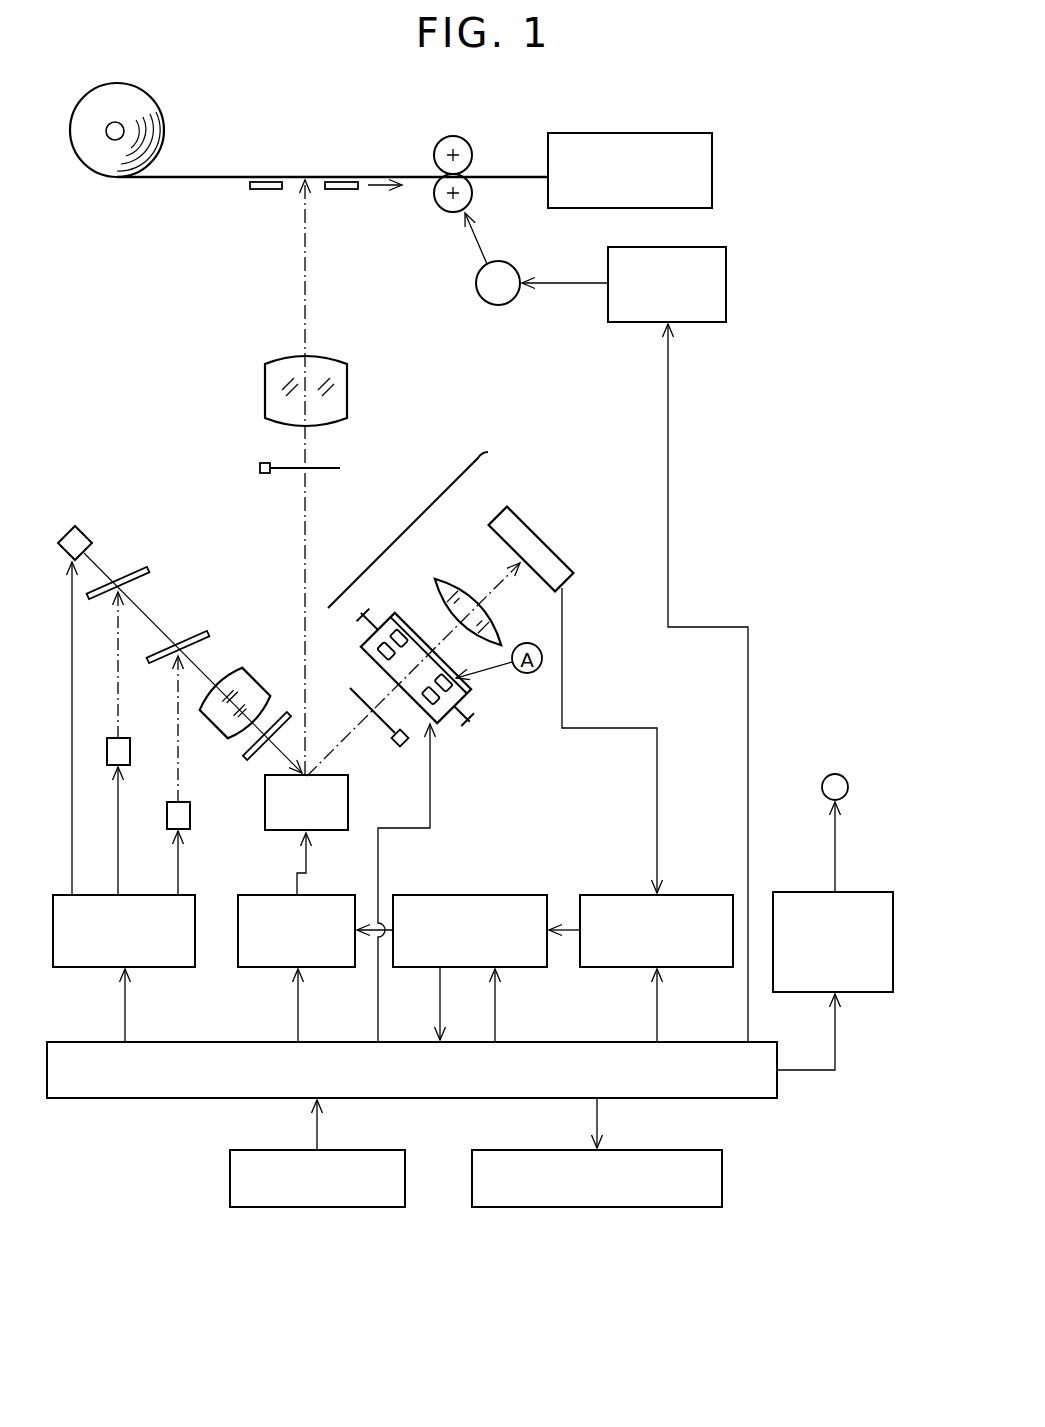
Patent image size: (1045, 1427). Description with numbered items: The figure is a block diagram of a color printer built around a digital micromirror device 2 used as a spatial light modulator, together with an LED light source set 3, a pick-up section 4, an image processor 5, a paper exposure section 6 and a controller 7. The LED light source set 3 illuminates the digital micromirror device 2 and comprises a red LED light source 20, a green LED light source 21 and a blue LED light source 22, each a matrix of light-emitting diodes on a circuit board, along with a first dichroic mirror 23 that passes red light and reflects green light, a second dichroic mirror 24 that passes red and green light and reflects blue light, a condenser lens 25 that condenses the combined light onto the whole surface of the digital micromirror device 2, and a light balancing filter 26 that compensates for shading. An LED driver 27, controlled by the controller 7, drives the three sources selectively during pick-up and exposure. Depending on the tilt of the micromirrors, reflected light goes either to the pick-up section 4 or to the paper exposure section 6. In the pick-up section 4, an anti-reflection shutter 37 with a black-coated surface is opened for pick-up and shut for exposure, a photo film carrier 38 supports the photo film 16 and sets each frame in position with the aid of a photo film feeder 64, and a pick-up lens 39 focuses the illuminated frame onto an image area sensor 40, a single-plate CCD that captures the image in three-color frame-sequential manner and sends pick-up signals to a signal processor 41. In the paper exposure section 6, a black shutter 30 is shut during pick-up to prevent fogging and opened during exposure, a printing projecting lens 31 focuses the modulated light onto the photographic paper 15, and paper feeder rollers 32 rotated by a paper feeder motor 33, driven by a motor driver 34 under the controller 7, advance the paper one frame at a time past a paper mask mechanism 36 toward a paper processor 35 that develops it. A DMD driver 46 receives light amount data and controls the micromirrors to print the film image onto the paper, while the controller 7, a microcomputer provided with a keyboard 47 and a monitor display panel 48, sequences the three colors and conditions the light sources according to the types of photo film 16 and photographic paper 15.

The digital micromirror device 2 is at (348, 790).
The LED light source set 3 is at (138, 512).
The pick-up section 4 is at (403, 531).
The image processor 5 is at (472, 895).
The paper exposure section 6 is at (400, 287).
The controller 7 is at (566, 1042).
The photographic paper 15 is at (215, 177).
The photo film 16 is at (468, 722).
The red LED light source 20 is at (73, 527).
The green LED light source 21 is at (112, 738).
The blue LED light source 22 is at (176, 802).
The first dichroic mirror 23 is at (150, 575).
The second dichroic mirror 24 is at (208, 633).
The condenser lens 25 is at (255, 688).
The light balancing filter 26 is at (255, 757).
The LED driver 27 is at (175, 967).
The black shutter 30 is at (260, 468).
The printing projecting lens 31 is at (265, 386).
The paper feeder rollers 32 is at (474, 153).
The paper feeder motor 33 is at (518, 268).
The motor driver 34 is at (726, 283).
The paper processor 35 is at (712, 167).
The paper mask mechanism 36 is at (267, 190).
The anti-reflection shutter 37 is at (355, 695).
The photo film carrier 38 is at (398, 625).
The pick-up lens 39 is at (458, 585).
The image area sensor 40 is at (540, 540).
The signal processor 41 is at (613, 895).
The DMD driver 46 is at (257, 895).
The keyboard 47 is at (318, 1207).
The monitor display panel 48 is at (597, 1207).
The photo film feeder 64 is at (876, 892).